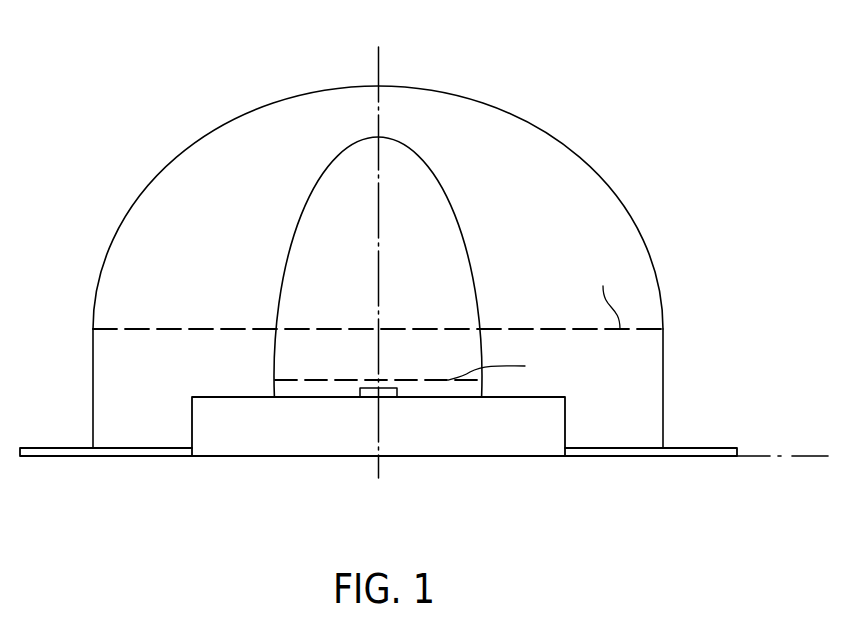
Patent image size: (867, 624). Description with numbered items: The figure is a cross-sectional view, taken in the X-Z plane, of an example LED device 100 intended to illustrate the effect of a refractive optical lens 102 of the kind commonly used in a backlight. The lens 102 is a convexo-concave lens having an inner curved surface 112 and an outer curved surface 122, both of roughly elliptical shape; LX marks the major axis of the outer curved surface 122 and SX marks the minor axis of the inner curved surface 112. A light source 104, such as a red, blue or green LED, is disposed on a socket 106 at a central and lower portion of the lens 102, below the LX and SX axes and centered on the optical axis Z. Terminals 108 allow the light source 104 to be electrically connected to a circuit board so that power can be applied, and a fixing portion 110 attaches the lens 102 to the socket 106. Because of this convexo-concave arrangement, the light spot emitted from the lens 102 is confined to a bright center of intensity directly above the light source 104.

The LED device 100 is at (757, 53).
The lens 102 is at (378, 265).
The light source 104 is at (368, 396).
The socket 106 is at (495, 437).
The terminals 108 is at (55, 451).
The fixing portion 110 is at (630, 410).
The inner curved surface 112 is at (463, 237).
The outer curved surface 122 is at (574, 152).